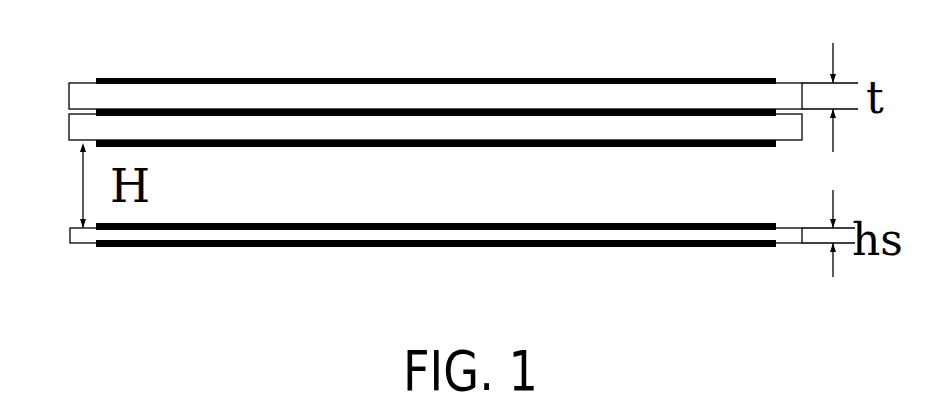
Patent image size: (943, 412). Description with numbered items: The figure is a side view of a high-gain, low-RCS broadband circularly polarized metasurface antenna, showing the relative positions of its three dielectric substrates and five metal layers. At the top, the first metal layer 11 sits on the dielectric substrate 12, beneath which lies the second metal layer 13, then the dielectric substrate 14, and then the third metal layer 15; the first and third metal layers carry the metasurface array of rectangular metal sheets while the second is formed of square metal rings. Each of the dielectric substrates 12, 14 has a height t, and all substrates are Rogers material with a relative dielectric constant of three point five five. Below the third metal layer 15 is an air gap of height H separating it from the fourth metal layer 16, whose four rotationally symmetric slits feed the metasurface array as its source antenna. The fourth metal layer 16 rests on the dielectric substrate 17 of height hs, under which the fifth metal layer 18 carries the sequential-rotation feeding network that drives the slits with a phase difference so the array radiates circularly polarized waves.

The metal layer 11 is at (130, 78).
The dielectric substrate 12 is at (787, 82).
The metal layer 13 is at (767, 118).
The dielectric substrate 14 is at (802, 140).
The metal layer 15 is at (460, 147).
The metal layer 16 is at (538, 223).
The dielectric substrate 17 is at (83, 243).
The metal layer 18 is at (722, 248).